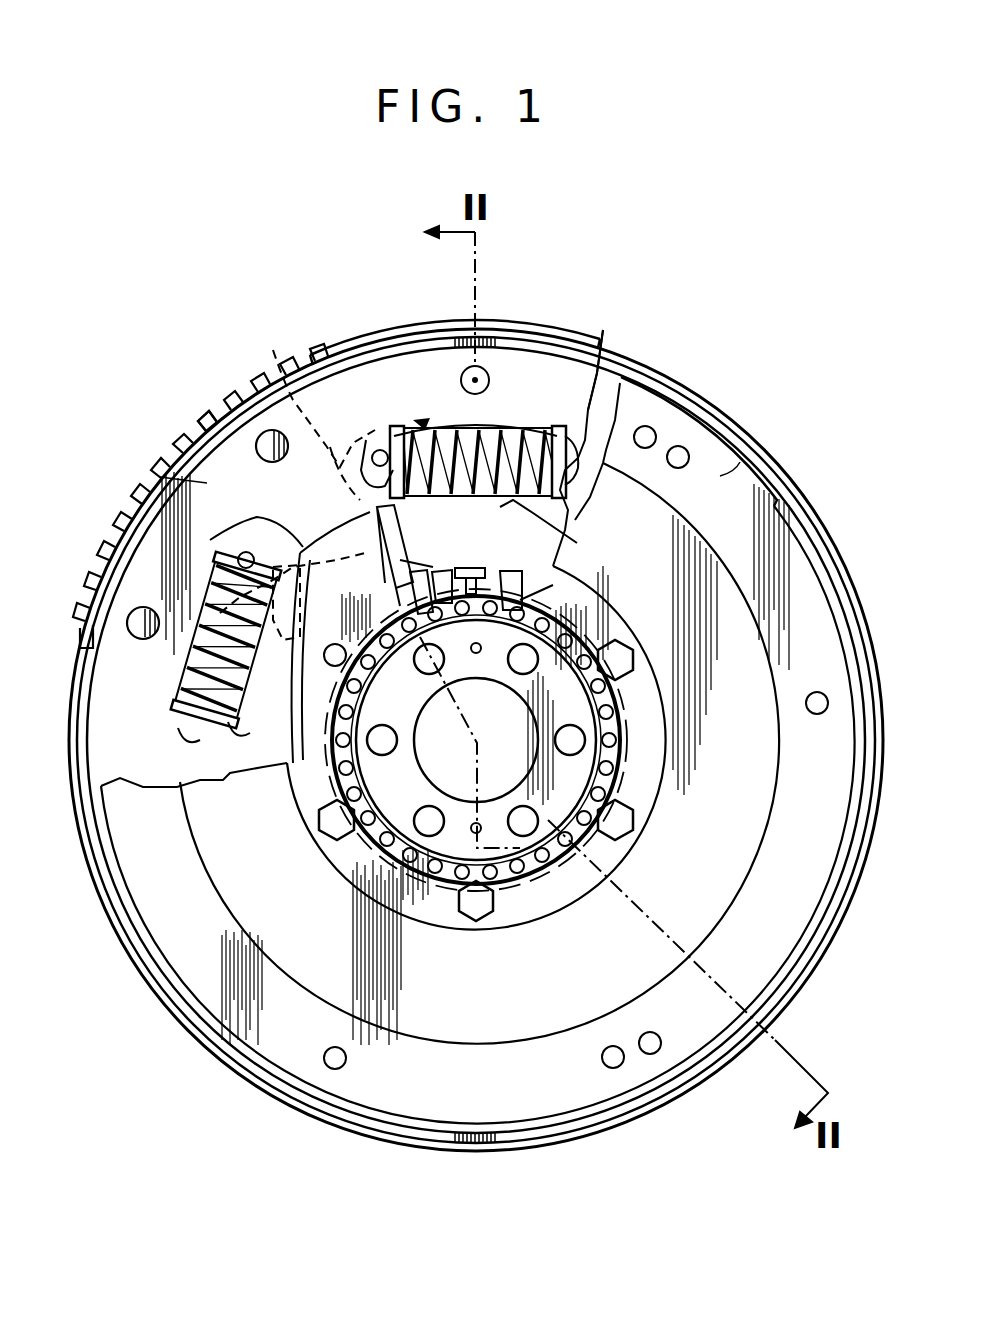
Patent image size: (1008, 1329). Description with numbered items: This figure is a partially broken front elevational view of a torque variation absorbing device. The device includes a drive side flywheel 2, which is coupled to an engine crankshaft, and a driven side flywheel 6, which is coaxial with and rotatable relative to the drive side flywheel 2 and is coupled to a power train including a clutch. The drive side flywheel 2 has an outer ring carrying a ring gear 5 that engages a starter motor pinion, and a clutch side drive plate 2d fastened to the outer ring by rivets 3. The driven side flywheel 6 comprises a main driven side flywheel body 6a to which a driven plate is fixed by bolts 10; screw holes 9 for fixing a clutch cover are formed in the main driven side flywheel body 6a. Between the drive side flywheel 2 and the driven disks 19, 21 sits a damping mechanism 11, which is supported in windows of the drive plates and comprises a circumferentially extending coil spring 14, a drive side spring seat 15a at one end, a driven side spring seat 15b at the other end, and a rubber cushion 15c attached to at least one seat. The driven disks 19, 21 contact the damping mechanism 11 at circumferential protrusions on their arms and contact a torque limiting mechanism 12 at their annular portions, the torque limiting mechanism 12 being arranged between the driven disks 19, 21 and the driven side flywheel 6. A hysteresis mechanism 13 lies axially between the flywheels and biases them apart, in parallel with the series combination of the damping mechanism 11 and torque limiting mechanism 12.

The drive side flywheel 2 is at (660, 367).
The clutch side drive plate 2d is at (180, 473).
The rivet 3 is at (268, 429).
The ring gear 5 is at (208, 424).
The driven side flywheel 6 is at (787, 478).
The main driven side flywheel body 6a is at (743, 452).
The screw hole 9 is at (348, 1061).
The bolt 10 is at (617, 826).
The damping mechanism 11 is at (420, 420).
The torque limiting mechanism 12 is at (382, 510).
The hysteresis mechanism 13 is at (470, 548).
The coil spring 14 is at (560, 538).
The drive side spring seat 15a is at (592, 405).
The driven side spring seat 15b is at (390, 430).
The cushion 15c is at (403, 425).
The driven disk 19 is at (275, 370).
The driven disk 21 is at (300, 557).